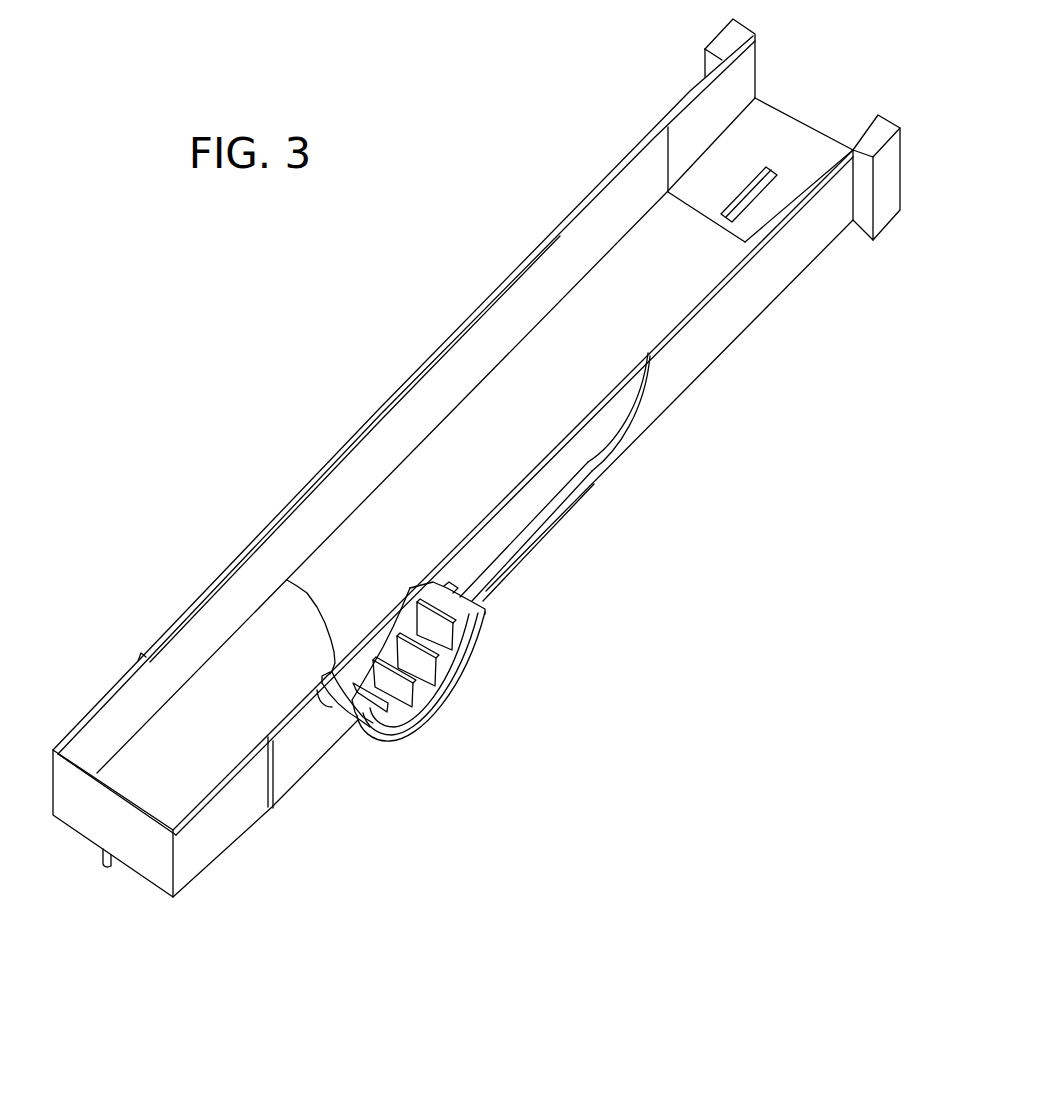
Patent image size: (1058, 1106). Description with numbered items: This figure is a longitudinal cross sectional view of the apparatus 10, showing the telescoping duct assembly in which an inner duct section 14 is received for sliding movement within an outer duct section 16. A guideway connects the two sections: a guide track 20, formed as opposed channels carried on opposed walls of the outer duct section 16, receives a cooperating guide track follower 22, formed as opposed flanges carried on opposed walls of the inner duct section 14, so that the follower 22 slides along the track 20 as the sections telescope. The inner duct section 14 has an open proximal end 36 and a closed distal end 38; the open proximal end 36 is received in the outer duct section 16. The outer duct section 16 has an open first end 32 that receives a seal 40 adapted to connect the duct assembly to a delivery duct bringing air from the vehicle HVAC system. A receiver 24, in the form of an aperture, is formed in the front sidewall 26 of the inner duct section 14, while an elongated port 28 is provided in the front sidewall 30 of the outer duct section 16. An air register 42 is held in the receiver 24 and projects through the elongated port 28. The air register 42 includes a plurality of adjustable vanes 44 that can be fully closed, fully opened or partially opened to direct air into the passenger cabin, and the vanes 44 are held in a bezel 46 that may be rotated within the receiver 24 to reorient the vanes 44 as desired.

The apparatus 10 is at (153, 407).
The inner duct section 14 is at (495, 420).
The outer duct section 16 is at (687, 138).
The guide track 20 is at (752, 195).
The guide track follower 22 is at (112, 868).
The receiver 24 is at (287, 580).
The front sidewall 26 is at (520, 498).
The elongated port 28 is at (585, 478).
The front sidewall 30 is at (678, 358).
The first end 32 is at (815, 132).
The open proximal end 36 is at (702, 205).
The closed distal end 38 is at (97, 822).
The seal 40 is at (883, 210).
The air register 42 is at (392, 740).
The adjustable vanes 44 is at (435, 635).
The bezel 46 is at (481, 632).